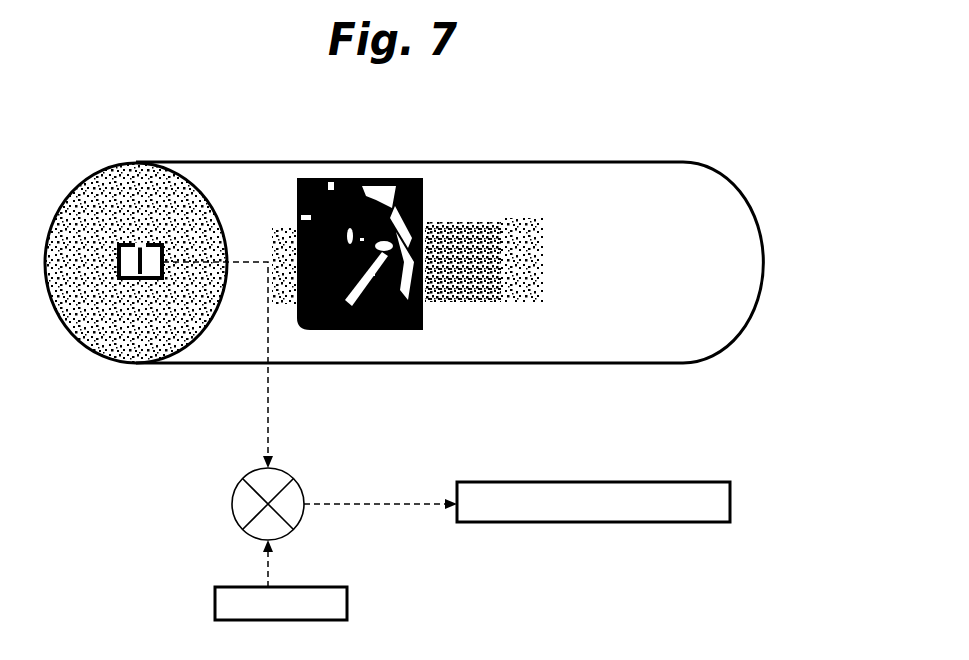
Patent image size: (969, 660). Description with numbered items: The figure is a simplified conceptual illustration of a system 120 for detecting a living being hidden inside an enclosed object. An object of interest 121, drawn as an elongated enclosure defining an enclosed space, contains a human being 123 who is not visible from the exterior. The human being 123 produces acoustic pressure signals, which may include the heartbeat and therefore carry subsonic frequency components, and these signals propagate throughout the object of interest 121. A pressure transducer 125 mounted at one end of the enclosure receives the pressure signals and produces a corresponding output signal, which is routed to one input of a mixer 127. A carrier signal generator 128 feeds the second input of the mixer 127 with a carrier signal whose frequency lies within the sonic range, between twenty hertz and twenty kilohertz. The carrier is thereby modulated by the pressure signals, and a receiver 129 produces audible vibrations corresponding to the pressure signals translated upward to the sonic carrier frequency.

The vibration sensing system 120 is at (686, 434).
The object of interest 121 is at (571, 190).
The human being 123 is at (362, 178).
The pressure transducer 125 is at (128, 280).
The mixer 127 is at (248, 507).
The carrier signal generator 128 is at (314, 587).
The receiver 129 is at (529, 482).